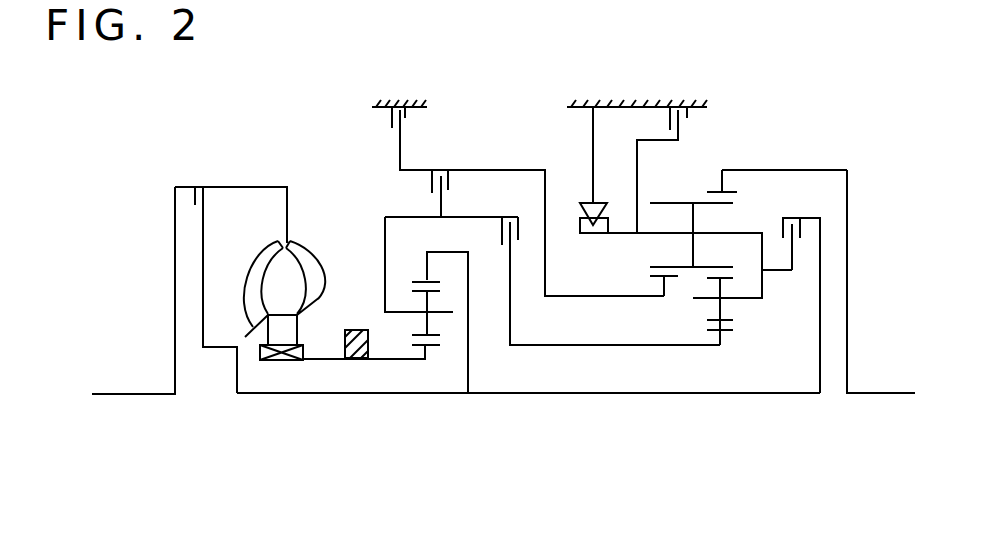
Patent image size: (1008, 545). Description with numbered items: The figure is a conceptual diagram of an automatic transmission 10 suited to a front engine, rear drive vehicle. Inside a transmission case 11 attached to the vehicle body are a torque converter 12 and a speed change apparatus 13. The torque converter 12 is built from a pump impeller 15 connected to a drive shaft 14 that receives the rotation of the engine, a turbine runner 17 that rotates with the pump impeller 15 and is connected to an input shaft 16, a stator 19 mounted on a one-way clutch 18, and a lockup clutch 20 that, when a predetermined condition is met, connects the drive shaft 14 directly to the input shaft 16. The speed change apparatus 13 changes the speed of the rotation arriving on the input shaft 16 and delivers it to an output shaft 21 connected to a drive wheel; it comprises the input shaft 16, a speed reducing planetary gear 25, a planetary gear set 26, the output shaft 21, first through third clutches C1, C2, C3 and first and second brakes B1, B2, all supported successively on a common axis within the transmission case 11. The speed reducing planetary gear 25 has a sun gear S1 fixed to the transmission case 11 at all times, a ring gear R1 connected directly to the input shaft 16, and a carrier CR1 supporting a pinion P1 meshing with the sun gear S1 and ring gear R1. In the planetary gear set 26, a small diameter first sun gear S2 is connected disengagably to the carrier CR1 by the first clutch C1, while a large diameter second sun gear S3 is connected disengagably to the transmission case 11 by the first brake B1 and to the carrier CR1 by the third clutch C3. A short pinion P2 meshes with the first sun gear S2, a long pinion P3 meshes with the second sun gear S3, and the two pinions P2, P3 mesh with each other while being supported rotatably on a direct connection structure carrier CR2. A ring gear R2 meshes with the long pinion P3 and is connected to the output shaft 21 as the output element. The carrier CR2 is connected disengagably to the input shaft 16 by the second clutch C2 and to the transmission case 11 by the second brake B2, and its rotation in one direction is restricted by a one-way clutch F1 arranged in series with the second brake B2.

The automatic transmission 10 is at (325, 138).
The transmission case 11 is at (345, 340).
The torque converter 12 is at (252, 170).
The speed change apparatus 13 is at (500, 135).
The drive shaft 14 is at (155, 395).
The pump impeller 15 is at (316, 248).
The input shaft 16 is at (345, 395).
The turbine runner 17 is at (252, 266).
The one-way clutch 18 is at (283, 362).
The stator 19 is at (272, 338).
The lockup clutch 20 is at (205, 187).
The output shaft 21 is at (855, 395).
The speed reducing planetary gear 25 is at (427, 336).
The planetary gear set 26 is at (711, 281).
The first brake B1 is at (407, 120).
The second brake B2 is at (687, 120).
The first clutch C1 is at (500, 230).
The second clutch C2 is at (790, 216).
The third clutch C3 is at (432, 185).
The carrier CR1 is at (405, 312).
The direct connection structure carrier CR2 is at (713, 232).
The one-way clutch F1 is at (593, 233).
The pinion P1 is at (437, 322).
The short pinion P2 is at (740, 304).
The long pinion P3 is at (686, 235).
The ring gear R1 is at (440, 322).
The ring gear R2 is at (755, 185).
The sun gear S1 is at (420, 372).
The first sun gear S2 is at (740, 341).
The second sun gear S3 is at (644, 284).